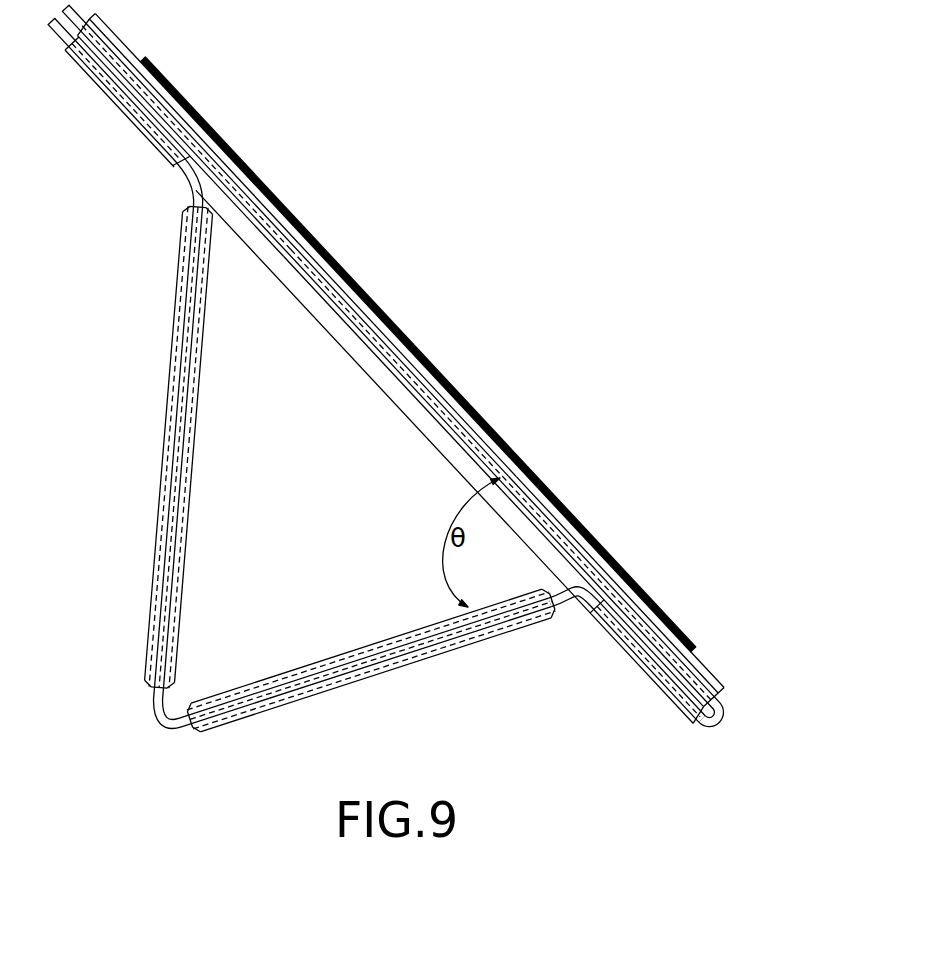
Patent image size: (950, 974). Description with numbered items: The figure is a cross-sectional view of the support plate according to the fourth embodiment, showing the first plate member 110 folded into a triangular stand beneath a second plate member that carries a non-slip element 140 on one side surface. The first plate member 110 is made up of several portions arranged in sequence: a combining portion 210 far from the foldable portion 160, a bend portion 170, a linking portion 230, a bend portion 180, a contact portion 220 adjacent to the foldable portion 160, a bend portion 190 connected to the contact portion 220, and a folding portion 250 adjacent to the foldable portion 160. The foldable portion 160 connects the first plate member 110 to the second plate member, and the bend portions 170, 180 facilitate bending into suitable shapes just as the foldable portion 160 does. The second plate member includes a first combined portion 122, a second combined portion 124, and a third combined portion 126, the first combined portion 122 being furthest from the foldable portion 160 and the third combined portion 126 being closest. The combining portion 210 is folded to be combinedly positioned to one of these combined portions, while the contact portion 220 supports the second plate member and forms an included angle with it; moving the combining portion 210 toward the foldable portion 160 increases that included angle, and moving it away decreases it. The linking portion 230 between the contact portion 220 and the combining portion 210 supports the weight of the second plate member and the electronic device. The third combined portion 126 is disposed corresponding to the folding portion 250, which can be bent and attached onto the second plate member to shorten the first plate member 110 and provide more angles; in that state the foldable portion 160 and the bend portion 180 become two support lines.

The first plate member 110 is at (56, 255).
The first combined portion 122 is at (146, 58).
The second combined portion 124 is at (417, 350).
The third combined portion 126 is at (673, 625).
The non-slip element 140 is at (332, 248).
The foldable portion 160 is at (740, 721).
The bend portion 170 is at (204, 176).
The bend portion 180 is at (168, 725).
The bend portion 190 is at (559, 608).
The combining portion 210 is at (122, 112).
The contact portion 220 is at (250, 690).
The linking portion 230 is at (173, 372).
The folding portion 250 is at (644, 655).